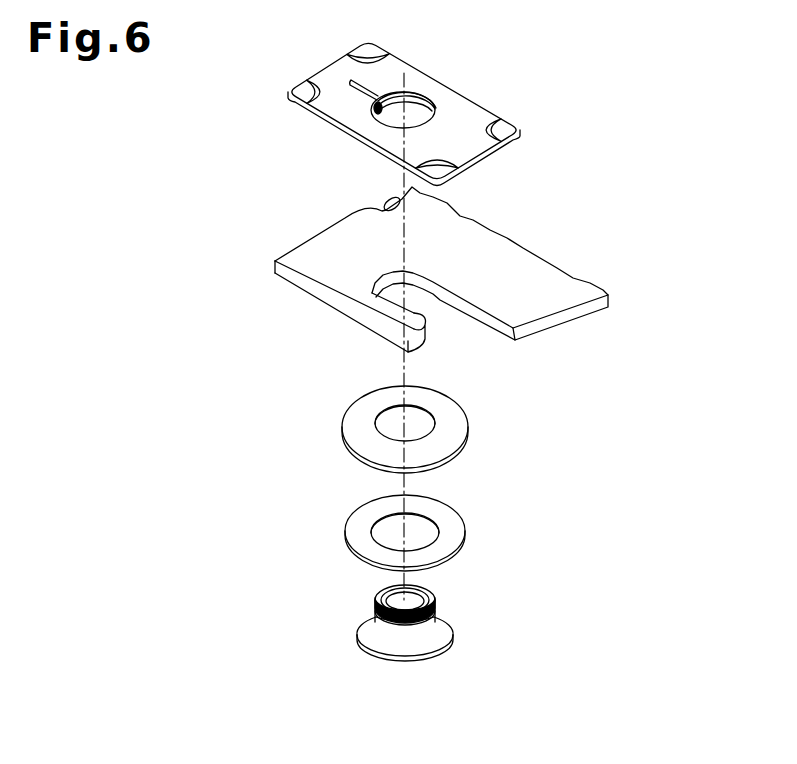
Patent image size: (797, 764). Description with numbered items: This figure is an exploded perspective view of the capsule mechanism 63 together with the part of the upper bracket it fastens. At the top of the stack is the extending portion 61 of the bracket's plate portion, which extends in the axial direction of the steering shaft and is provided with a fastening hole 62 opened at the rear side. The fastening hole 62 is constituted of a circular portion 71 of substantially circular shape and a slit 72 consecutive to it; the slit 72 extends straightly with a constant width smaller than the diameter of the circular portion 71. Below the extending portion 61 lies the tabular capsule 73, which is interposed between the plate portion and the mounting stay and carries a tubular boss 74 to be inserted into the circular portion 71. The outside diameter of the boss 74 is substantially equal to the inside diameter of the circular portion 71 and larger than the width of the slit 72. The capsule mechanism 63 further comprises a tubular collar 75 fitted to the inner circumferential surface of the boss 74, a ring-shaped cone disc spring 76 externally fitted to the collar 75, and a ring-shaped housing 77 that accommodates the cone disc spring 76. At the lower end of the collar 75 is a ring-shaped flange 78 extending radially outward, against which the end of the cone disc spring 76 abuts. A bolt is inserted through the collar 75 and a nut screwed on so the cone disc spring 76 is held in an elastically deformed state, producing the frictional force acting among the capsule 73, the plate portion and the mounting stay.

The extending portion 61 is at (318, 240).
The fastening hole 62 is at (362, 358).
The capsule mechanism 63 is at (606, 129).
The circular portion 71 is at (375, 292).
The slit 72 is at (397, 311).
The capsule 73 is at (484, 111).
The boss 74 is at (418, 93).
The collar 75 is at (438, 613).
The cone disc spring 76 is at (455, 523).
The housing 77 is at (457, 423).
The flange 78 is at (437, 638).